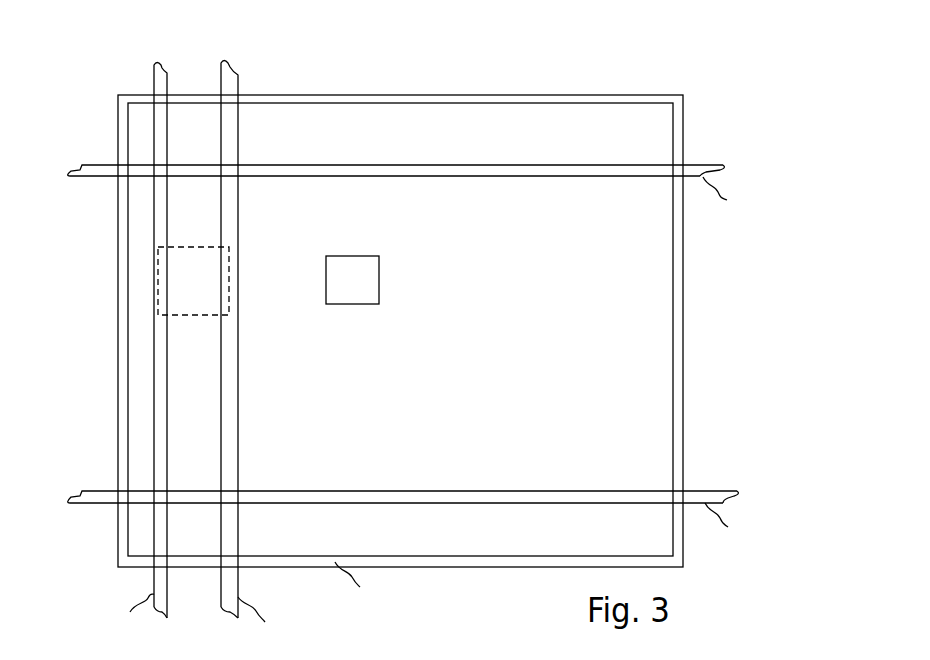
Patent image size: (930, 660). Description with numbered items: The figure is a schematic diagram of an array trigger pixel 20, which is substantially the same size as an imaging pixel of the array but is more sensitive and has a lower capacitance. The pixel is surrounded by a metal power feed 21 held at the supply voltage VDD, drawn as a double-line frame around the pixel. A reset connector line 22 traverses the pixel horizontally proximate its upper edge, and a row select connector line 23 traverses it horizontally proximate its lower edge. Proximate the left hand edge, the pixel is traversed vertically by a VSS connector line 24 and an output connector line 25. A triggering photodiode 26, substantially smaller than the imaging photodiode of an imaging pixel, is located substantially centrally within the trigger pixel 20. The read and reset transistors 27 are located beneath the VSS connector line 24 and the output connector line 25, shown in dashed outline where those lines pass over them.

The pixel 20 is at (724, 56).
The metal power feed 21 is at (683, 312).
The reset connector line 22 is at (95, 164).
The row select connector line 23 is at (92, 491).
The VSS connector line 24 is at (153, 67).
The output connector line 25 is at (219, 73).
The triggering photodiode 26 is at (364, 281).
The read and reset transistors 27 is at (203, 274).